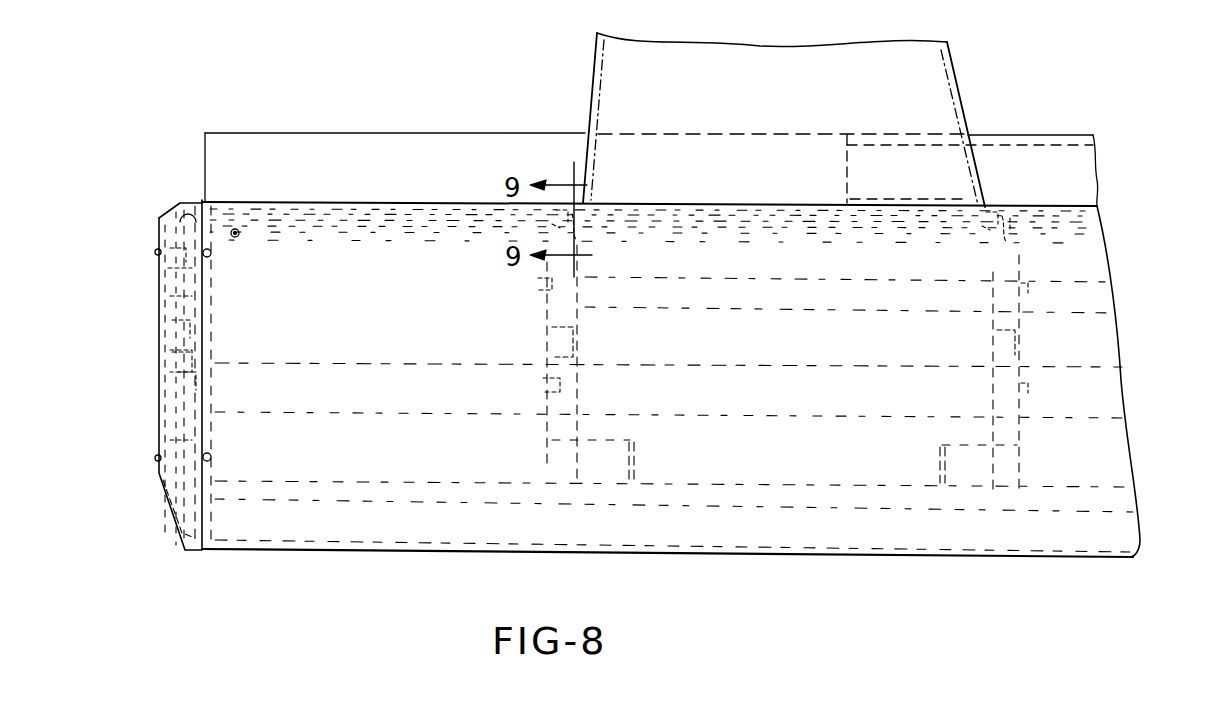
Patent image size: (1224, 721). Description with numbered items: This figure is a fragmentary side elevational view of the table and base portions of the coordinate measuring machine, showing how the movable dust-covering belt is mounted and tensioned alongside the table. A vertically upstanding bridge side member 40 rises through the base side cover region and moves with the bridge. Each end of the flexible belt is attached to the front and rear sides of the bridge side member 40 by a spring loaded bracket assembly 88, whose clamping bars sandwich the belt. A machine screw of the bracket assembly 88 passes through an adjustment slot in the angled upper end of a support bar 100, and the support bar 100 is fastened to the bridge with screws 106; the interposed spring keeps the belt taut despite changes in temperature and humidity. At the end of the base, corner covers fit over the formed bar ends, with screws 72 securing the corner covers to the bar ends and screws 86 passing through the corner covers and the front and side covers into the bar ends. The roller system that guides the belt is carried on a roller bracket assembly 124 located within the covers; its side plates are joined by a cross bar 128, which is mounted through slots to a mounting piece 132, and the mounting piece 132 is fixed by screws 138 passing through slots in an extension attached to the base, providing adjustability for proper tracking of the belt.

The bridge side member 40 is at (834, 91).
The screw 72 is at (158, 271).
The screw 86 is at (200, 252).
The spring loaded bracket assembly 88 is at (583, 206).
The support bar 100 is at (543, 343).
The screw 106 is at (538, 282).
The roller bracket assembly 124 is at (295, 330).
The cross bar 128 is at (190, 335).
The mounting piece 132 is at (187, 357).
The screw 138 is at (197, 381).